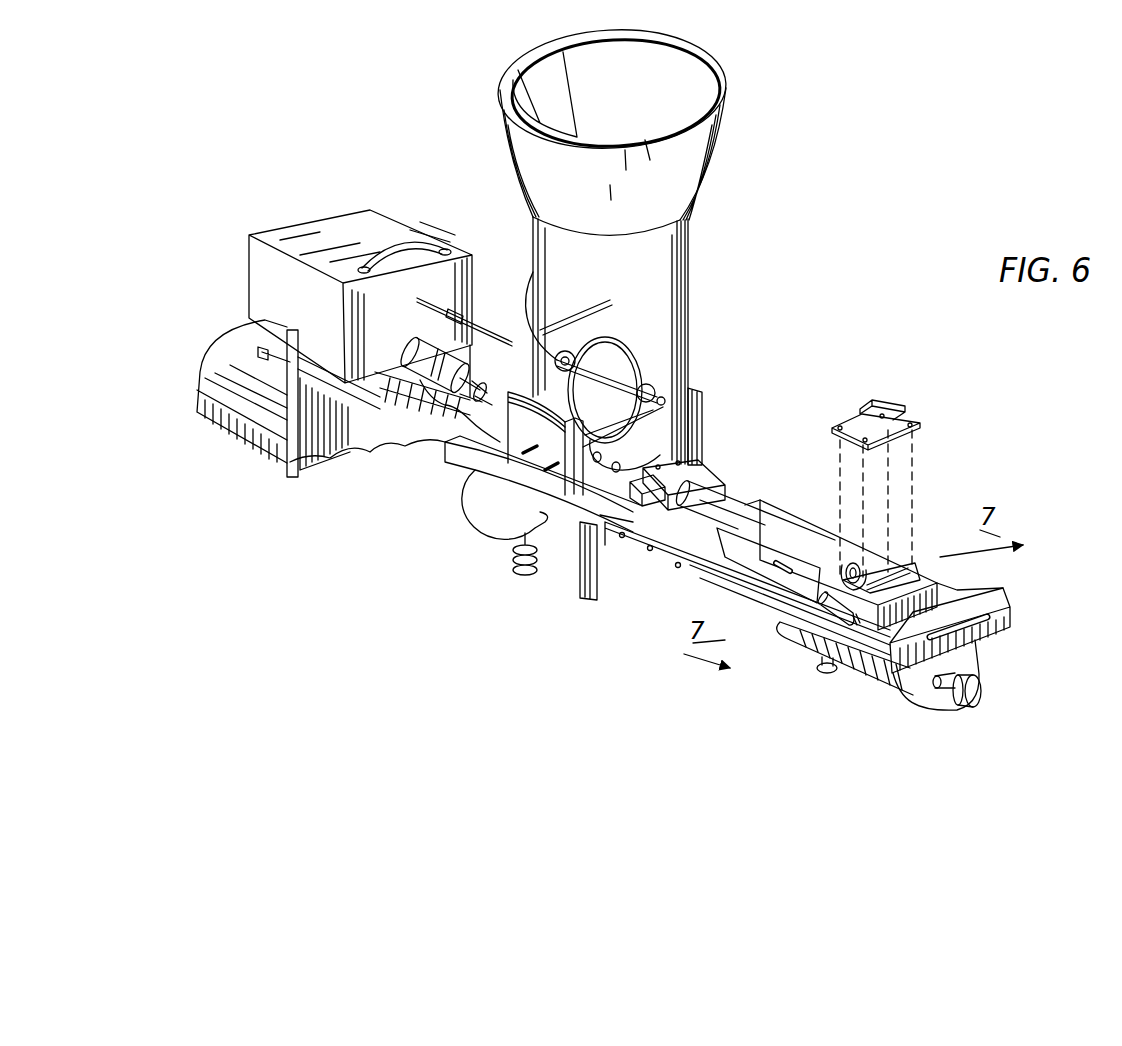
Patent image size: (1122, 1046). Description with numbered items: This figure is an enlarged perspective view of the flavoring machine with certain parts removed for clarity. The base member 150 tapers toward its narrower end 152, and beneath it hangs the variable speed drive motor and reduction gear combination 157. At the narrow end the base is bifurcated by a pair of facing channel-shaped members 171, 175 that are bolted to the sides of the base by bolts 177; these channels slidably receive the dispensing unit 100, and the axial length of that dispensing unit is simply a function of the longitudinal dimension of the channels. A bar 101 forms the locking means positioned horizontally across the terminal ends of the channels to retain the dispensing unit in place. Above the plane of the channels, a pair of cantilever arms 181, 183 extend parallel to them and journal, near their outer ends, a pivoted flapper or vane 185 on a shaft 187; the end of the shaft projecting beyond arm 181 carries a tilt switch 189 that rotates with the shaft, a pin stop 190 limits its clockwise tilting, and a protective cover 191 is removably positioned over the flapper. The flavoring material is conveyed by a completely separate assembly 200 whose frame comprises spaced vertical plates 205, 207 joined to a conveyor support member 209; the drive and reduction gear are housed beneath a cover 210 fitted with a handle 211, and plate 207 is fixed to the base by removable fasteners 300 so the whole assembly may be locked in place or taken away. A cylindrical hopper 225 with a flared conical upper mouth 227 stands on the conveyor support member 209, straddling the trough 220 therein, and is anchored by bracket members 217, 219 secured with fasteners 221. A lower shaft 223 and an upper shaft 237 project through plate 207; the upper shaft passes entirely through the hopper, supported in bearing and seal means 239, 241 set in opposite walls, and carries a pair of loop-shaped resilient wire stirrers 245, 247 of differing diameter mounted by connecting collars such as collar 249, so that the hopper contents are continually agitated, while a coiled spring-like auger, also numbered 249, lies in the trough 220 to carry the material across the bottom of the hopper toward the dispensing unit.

The dispensing unit 100 is at (834, 569).
The bar 101 is at (1005, 614).
The base member 150 is at (785, 515).
The narrower end 152 is at (683, 537).
The variable speed drive motor and reduction gear combination 157 is at (233, 440).
The channel-shaped member 171 is at (833, 677).
The channel-shaped member 175 is at (952, 588).
The bolts 177 is at (650, 550).
The cantilever arm 181 is at (755, 555).
The cantilever arm 183 is at (828, 556).
The flapper 185 is at (898, 590).
The shaft 187 is at (862, 660).
The tilt switch 189 is at (832, 605).
The pin stop 190 is at (845, 576).
The protective cover 191 is at (908, 415).
The conveying assembly 200 is at (324, 286).
The vertical plate 205 is at (275, 457).
The vertical plate 207 is at (418, 334).
The conveyor support member 209 is at (383, 388).
The cover 210 is at (262, 280).
The handle 211 is at (380, 243).
The bracket member 217 is at (513, 437).
The bracket member 219 is at (700, 396).
The trough 220 is at (688, 538).
The fasteners 221 is at (522, 455).
The shaft 223 is at (476, 395).
The cylindrical hopper 225 is at (689, 295).
The flared conical upper mouth 227 is at (697, 97).
The second shaft 237 is at (505, 342).
The bearing and seal means 239 is at (549, 305).
The bearing and seal means 241 is at (668, 392).
The stirrer 245 is at (618, 377).
The stirrer 247 is at (600, 343).
The connecting collar 249 is at (572, 362).
The fasteners 300 is at (203, 358).